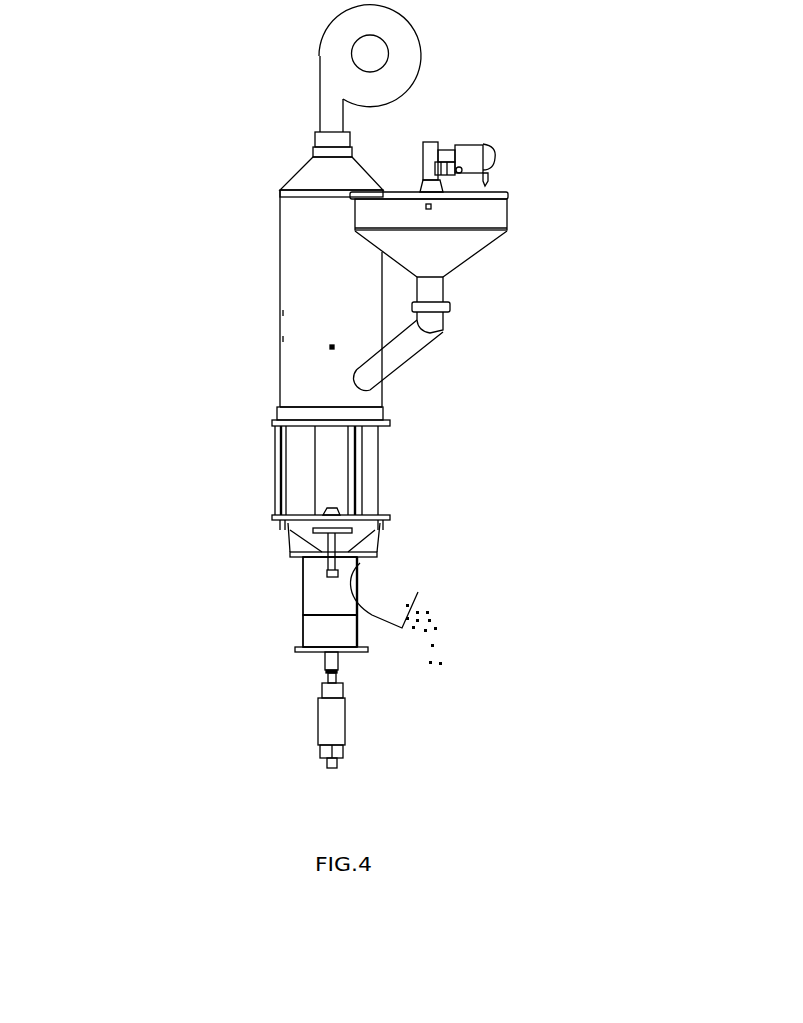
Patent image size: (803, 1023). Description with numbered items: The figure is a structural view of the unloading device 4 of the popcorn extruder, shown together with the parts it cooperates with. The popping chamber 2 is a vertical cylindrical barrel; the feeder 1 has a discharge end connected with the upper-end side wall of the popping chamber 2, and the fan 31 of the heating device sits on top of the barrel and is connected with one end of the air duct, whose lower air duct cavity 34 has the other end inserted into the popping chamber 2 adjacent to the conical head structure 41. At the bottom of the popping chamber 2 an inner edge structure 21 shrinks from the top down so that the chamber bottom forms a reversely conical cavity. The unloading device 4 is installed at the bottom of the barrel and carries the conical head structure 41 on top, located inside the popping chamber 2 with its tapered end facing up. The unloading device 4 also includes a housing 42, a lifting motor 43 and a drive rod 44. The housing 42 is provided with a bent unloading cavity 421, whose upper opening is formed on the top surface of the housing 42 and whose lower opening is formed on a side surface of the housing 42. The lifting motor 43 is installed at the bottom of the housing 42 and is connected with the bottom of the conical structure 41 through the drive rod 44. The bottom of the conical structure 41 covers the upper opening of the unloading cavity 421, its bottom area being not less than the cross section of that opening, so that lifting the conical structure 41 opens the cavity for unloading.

The feeder 1 is at (412, 348).
The popping chamber 2 is at (280, 472).
The inner edge structure 21 is at (320, 548).
The fan 31 is at (335, 117).
The lower air duct cavity 34 is at (332, 453).
The unloading device 4 is at (305, 603).
The conical head structure 41 is at (302, 558).
The housing 42 is at (297, 650).
The unloading cavity 421 is at (338, 560).
The lifting motor 43 is at (330, 732).
The drive rod 44 is at (303, 577).